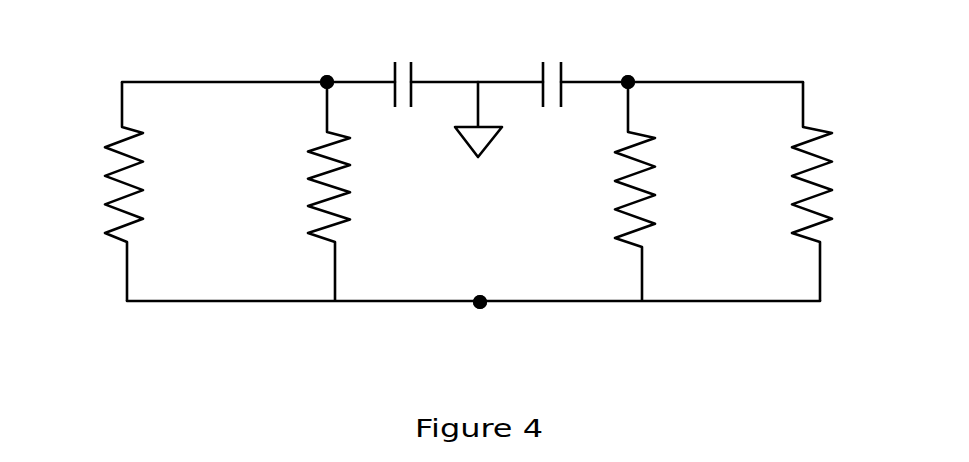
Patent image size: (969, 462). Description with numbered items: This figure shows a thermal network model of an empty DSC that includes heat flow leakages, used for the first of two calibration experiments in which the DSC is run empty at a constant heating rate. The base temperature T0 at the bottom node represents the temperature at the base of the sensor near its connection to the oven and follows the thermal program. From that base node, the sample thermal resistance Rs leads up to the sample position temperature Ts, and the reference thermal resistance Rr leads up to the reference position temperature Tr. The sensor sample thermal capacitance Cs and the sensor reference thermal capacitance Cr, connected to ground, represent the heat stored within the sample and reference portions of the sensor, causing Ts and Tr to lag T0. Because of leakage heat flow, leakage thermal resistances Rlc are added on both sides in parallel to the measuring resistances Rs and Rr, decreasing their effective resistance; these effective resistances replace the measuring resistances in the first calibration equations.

The leakage thermal resistance Rlc is at (464, 191).
The sample thermal resistance Rs is at (304, 191).
The reference thermal resistance Rr is at (662, 191).
The sensor sample thermal capacitance Cs is at (397, 109).
The sensor reference thermal capacitance Cr is at (555, 109).
The sample position temperature Ts is at (290, 98).
The reference position temperature Tr is at (660, 99).
The base temperature T0 is at (487, 330).